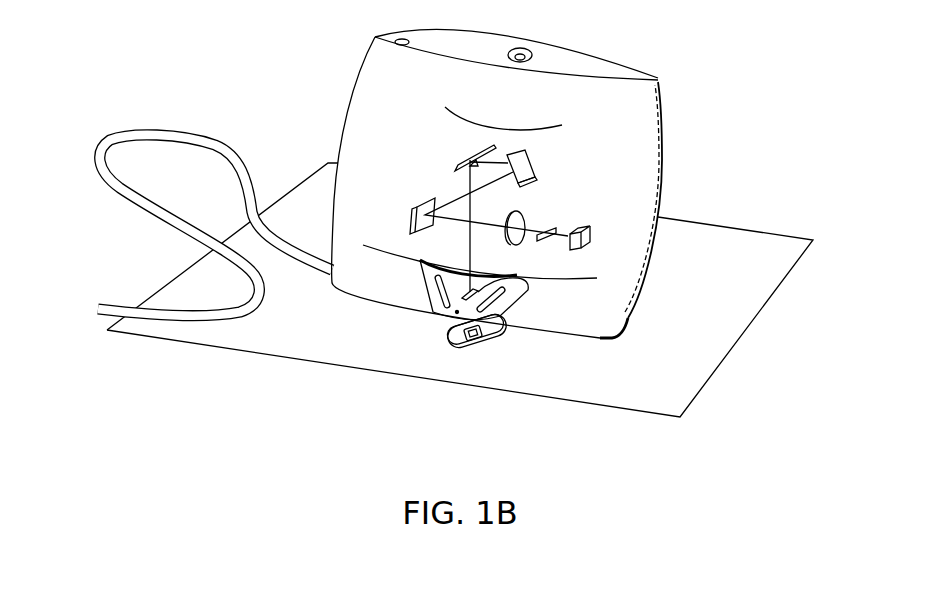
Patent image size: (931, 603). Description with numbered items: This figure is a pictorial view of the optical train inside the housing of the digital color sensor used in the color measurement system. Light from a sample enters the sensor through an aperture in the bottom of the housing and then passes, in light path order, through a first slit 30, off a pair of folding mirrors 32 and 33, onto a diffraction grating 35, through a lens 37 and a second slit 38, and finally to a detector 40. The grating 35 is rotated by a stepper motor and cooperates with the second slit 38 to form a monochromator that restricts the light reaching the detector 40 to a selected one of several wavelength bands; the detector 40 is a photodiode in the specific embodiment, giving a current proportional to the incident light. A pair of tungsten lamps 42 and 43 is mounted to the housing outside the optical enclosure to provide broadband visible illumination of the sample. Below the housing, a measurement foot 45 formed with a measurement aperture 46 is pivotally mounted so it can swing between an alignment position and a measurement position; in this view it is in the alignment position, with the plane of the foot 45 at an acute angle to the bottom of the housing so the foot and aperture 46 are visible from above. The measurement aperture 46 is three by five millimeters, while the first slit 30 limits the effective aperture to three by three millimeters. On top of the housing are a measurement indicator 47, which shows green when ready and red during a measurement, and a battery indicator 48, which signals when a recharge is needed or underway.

The first slit 30 is at (500, 282).
The folding mirror 32 is at (466, 156).
The folding mirror 33 is at (526, 152).
The diffraction grating 35 is at (428, 198).
The lens 37 is at (518, 215).
The second slit 38 is at (557, 226).
The detector 40 is at (585, 226).
The tungsten lamp 42 is at (430, 280).
The tungsten lamp 43 is at (497, 301).
The measurement foot 45 is at (463, 356).
The measurement aperture 46 is at (497, 327).
The measurement indicator 47 is at (520, 48).
The battery indicator 48 is at (402, 38).